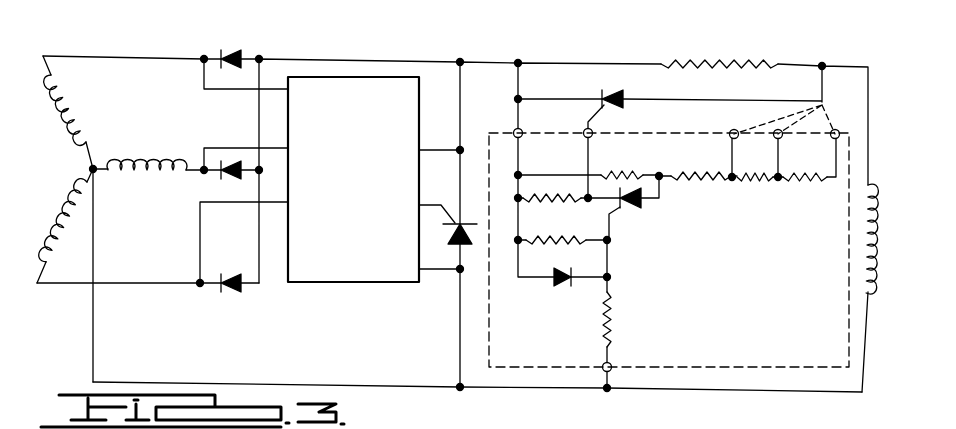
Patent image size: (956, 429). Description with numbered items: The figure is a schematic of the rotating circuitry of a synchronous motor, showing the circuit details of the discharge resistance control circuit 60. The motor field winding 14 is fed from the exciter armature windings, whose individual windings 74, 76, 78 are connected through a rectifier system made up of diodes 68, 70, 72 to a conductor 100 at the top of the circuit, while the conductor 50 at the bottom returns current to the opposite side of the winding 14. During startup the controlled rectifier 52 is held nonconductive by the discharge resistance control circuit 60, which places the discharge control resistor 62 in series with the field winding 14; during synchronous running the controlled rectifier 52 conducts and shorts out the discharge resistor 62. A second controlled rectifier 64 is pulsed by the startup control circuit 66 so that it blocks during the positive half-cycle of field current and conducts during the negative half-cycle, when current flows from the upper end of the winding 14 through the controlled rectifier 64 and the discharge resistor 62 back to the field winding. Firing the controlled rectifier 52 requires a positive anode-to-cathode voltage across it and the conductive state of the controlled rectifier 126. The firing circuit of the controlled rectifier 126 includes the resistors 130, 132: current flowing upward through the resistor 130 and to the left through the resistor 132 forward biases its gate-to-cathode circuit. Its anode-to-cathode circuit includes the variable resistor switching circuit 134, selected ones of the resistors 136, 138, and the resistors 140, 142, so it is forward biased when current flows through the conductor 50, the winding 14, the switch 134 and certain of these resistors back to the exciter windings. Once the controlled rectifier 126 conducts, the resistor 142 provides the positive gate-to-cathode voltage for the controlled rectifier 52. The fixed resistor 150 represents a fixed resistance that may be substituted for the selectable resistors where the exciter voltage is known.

The motor field winding 14 is at (862, 237).
The conductor 50 is at (233, 382).
The controlled rectifier 52 is at (613, 86).
The discharge resistance control circuit 60 is at (521, 365).
The discharge control resistor 62 is at (750, 62).
The second controlled rectifier 64 is at (452, 245).
The startup control circuit 66 is at (348, 282).
The diode 68 is at (232, 50).
The diode 70 is at (230, 158).
The diode 72 is at (226, 292).
The individual winding 74 is at (70, 97).
The individual winding 76 is at (158, 163).
The individual winding 78 is at (80, 218).
The conductor 100 is at (402, 60).
The second controlled rectifier 126 is at (622, 205).
The resistor 130 is at (612, 310).
The resistor 132 is at (533, 238).
The variable resistor switching circuit 134 is at (838, 98).
The resistor 136 is at (793, 178).
The resistor 138 is at (750, 182).
The resistor 140 is at (687, 182).
The resistor 142 is at (545, 190).
The fixed resistor 150 is at (553, 280).